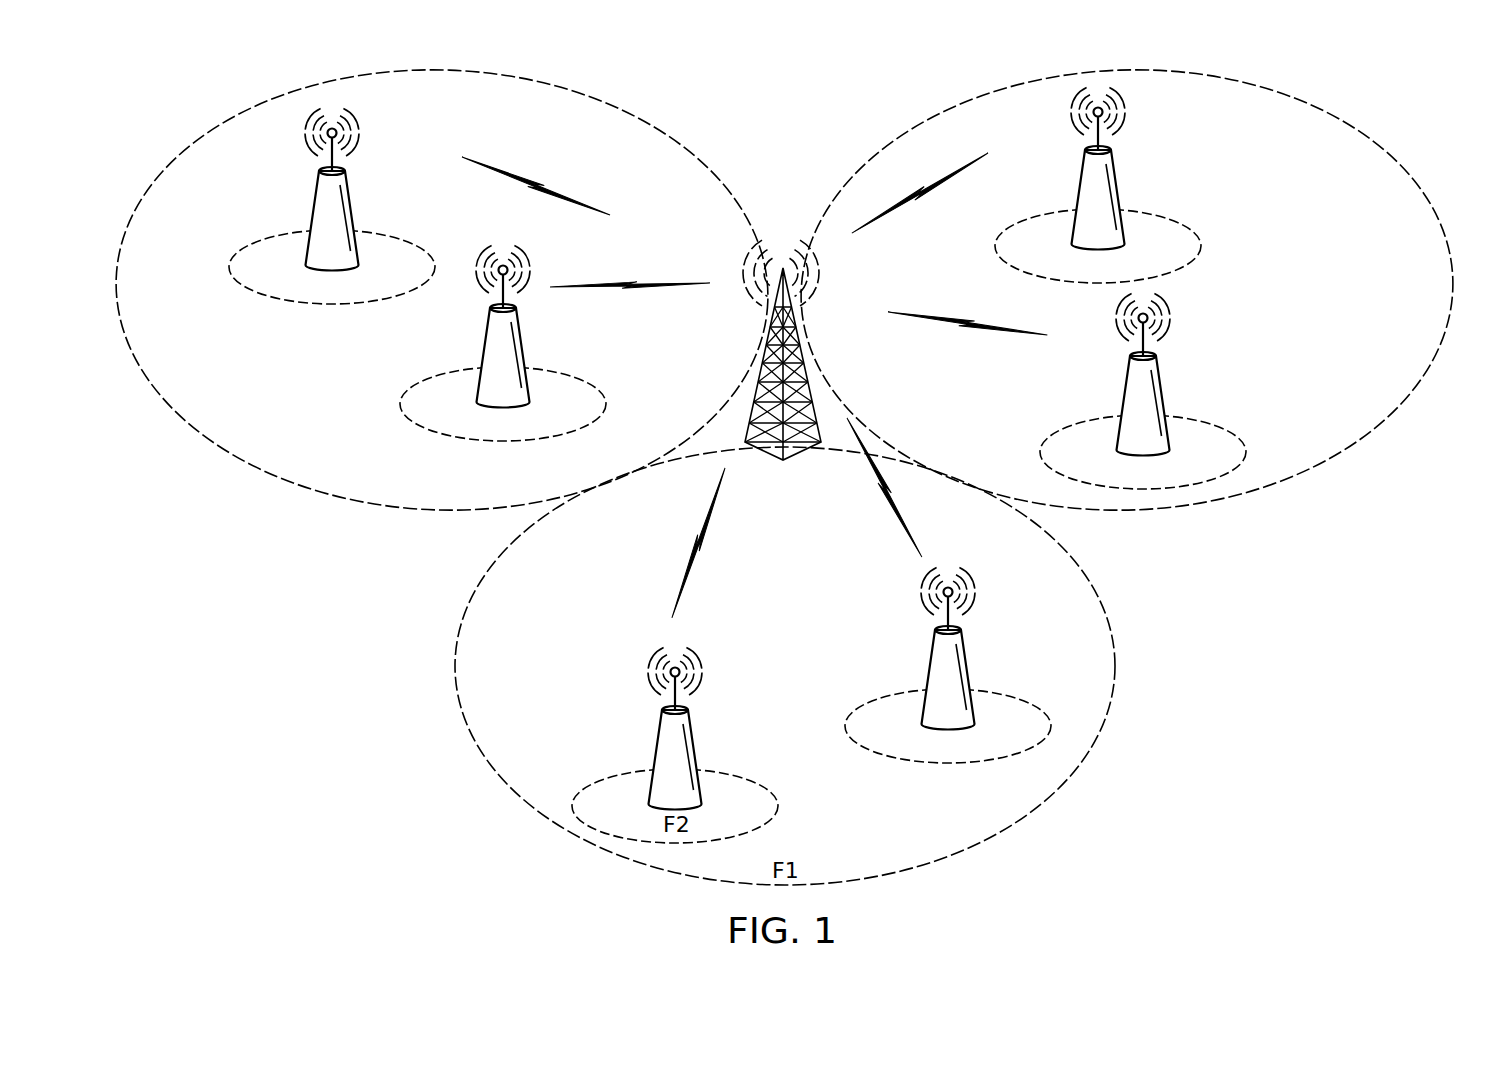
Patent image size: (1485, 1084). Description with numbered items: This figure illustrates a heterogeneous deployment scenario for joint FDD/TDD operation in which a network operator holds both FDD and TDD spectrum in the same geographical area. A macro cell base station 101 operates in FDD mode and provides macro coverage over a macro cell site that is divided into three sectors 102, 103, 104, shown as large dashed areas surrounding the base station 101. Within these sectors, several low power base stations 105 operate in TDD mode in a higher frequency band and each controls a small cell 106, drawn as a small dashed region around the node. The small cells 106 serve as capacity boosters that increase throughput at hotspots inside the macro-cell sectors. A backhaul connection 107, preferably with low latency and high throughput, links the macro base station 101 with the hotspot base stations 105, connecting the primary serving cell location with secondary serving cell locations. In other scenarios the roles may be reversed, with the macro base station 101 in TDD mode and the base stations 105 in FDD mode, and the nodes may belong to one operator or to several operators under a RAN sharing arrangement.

The base station 101 is at (806, 364).
The sector 102 is at (176, 158).
The sector 103 is at (1392, 158).
The sector 104 is at (648, 870).
The base station 105 is at (657, 738).
The small cell 106 is at (731, 768).
The backhaul connection 107 is at (689, 572).